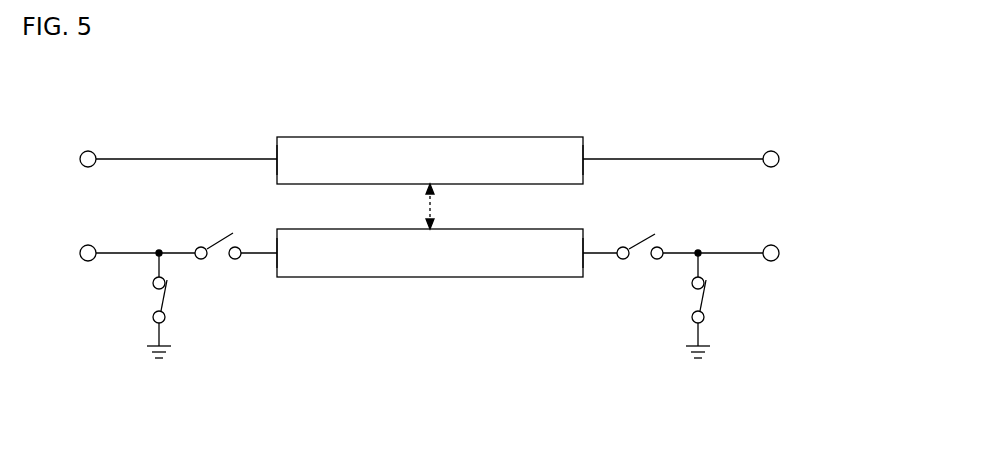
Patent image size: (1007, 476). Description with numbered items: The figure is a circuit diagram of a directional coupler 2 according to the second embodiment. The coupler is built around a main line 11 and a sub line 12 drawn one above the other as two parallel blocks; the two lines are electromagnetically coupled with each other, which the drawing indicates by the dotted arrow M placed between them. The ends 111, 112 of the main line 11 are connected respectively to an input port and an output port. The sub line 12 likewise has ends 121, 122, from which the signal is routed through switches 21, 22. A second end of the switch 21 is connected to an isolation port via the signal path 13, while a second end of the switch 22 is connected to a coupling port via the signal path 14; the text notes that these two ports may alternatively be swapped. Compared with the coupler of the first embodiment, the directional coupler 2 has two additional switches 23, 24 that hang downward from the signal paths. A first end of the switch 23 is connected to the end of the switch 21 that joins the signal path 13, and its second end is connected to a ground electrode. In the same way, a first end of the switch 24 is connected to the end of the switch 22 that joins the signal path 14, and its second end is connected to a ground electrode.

The directional coupler 2 is at (782, 89).
The main line 11 is at (383, 137).
The sub line 12 is at (383, 229).
The end of main line 111 is at (277, 159).
The end of main line 112 is at (583, 159).
The end of sub line 121 is at (583, 253).
The end of sub line 122 is at (277, 253).
The signal path 13 is at (723, 253).
The signal path 14 is at (135, 253).
The switch 21 is at (641, 241).
The switch 22 is at (218, 240).
The switch 23 is at (707, 293).
The switch 24 is at (168, 293).
The dotted arrow M is at (433, 214).